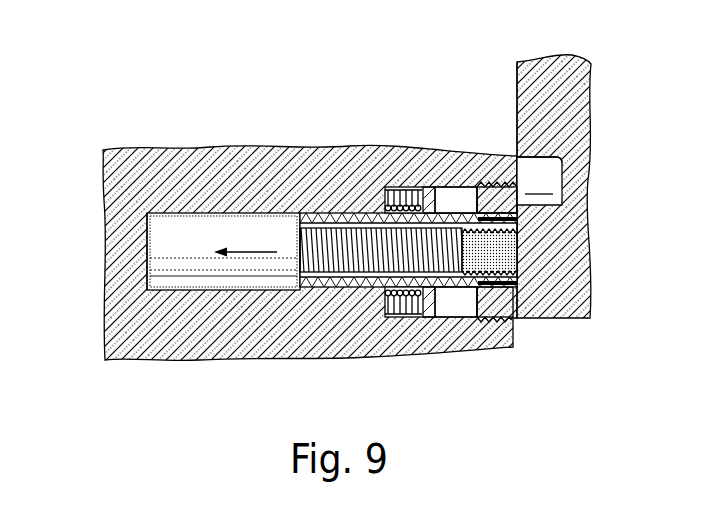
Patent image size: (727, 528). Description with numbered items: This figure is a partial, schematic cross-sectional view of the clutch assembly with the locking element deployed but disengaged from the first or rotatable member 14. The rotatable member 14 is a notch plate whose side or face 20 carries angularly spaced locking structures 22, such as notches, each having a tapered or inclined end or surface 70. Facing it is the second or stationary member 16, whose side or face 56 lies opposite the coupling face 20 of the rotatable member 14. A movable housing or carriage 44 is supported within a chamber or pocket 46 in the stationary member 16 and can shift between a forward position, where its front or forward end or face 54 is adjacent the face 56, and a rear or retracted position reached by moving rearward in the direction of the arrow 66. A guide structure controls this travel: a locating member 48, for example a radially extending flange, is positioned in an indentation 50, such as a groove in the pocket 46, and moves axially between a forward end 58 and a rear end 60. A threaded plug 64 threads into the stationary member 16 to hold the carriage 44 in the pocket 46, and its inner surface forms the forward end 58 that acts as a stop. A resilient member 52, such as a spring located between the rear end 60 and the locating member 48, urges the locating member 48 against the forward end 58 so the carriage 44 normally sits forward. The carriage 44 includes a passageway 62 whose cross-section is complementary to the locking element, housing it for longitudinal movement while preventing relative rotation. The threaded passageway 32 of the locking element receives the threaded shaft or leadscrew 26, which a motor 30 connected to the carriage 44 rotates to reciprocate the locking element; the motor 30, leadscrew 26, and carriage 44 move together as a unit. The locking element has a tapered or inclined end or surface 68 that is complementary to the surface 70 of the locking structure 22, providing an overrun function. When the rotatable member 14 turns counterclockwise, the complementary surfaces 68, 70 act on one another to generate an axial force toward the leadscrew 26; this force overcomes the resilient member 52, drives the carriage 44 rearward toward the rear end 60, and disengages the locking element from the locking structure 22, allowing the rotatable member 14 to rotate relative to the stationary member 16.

The first member 14 is at (570, 80).
The second member 16 is at (122, 152).
The side or face 20 is at (517, 82).
The locking structure 22 is at (539, 181).
The threaded shaft or leadscrew 26 is at (300, 254).
The motor 30 is at (173, 232).
The threaded passageway 32 is at (520, 250).
The carriage 44 is at (350, 214).
The chamber or pocket 46 is at (148, 262).
The locating member 48 is at (427, 190).
The indentation 50 is at (452, 190).
The resilient member 52 is at (400, 318).
The front or forward end or face 54 is at (497, 221).
The side or face 56 is at (515, 335).
The forward end 58 is at (527, 152).
The rear end 60 is at (412, 187).
The passageway 62 is at (318, 258).
The threaded plug 64 is at (520, 318).
The arrow 66 is at (247, 250).
The tapered or inclined end or surface 68 is at (490, 273).
The tapered or inclined end or surface 70 is at (520, 222).